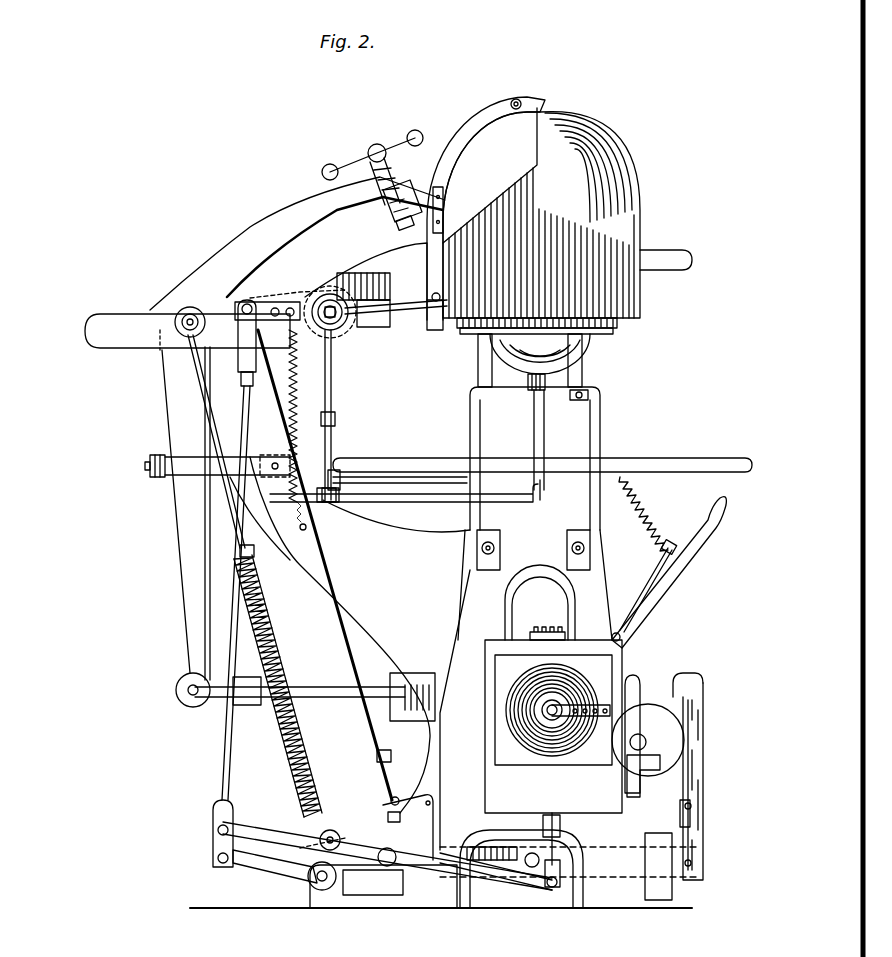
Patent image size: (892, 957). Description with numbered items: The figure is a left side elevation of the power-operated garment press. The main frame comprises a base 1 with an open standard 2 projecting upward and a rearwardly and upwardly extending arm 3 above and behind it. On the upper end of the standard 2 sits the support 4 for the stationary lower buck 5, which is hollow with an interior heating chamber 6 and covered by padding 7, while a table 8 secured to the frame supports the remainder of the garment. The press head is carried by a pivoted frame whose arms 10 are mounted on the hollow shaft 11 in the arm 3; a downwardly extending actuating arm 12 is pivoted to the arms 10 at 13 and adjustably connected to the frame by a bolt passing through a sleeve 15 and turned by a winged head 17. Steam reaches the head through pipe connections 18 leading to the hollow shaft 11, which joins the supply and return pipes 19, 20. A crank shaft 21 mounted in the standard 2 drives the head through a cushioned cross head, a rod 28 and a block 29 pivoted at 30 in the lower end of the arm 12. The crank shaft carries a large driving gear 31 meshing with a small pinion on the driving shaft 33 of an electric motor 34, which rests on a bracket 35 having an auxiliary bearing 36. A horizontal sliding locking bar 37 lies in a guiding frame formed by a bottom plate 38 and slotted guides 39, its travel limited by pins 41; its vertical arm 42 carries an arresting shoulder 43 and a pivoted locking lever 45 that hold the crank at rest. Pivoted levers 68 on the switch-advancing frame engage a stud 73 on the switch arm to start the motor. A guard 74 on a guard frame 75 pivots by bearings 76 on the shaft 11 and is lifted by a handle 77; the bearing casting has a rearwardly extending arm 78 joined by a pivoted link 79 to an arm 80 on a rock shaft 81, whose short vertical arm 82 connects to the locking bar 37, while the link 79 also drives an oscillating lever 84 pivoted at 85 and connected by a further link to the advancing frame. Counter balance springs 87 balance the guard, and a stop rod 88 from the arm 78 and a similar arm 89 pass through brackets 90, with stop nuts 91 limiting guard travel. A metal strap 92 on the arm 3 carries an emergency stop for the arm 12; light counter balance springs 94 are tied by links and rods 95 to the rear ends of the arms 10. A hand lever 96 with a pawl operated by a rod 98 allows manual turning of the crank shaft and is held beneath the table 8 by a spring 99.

The base 1 is at (440, 908).
The standard 2 is at (595, 598).
The rearwardly and upwardly extending arm 3 is at (375, 545).
The support 4 is at (573, 443).
The lower buck 5 is at (600, 330).
The heating chamber 6 is at (582, 356).
The padding 7 is at (457, 326).
The table 8 is at (684, 460).
The arms 10 is at (368, 258).
The hollow shaft 11 is at (322, 336).
The actuating arm 12 is at (186, 578).
The pivot 13 is at (182, 318).
The sleeve 15 is at (410, 196).
The winged head 17 is at (376, 146).
The pipe connections 18 is at (412, 320).
The supply pipe 19 is at (425, 500).
The return pipe 20 is at (402, 478).
The crank shaft 21 is at (590, 697).
The rod 28 is at (330, 700).
The block 29 is at (246, 706).
The pivotal connection 30 is at (188, 690).
The driving gear 31 is at (540, 630).
The driving shaft 33 is at (650, 735).
The electric motor 34 is at (638, 708).
The bracket 35 is at (650, 772).
The auxiliary bearing 36 is at (562, 838).
The locking bar 37 is at (578, 870).
The bottom plate 38 is at (515, 888).
The guides 39 is at (665, 838).
The pins 41 is at (692, 863).
The vertical arm 42 is at (693, 740).
The arresting shoulder 43 is at (690, 680).
The locking lever 45 is at (690, 778).
The pivoted levers 68 is at (576, 737).
The stud 73 is at (612, 715).
The guard 74 is at (541, 213).
The guard frame 75 is at (492, 135).
The bearings 76 is at (348, 326).
The handle 77 is at (684, 262).
The rearwardly extending arm 78 is at (238, 308).
The pivoted link 79 is at (224, 742).
The arm 80 is at (260, 870).
The rock shaft 81 is at (326, 884).
The short vertical arm 82 is at (333, 838).
The oscillating lever 84 is at (252, 830).
The pivot 85 is at (392, 864).
The counter balance springs 87 is at (300, 508).
The stop rod 88 is at (350, 636).
The arm 89 is at (264, 300).
The brackets 90 is at (388, 806).
The stop nuts 91 is at (380, 757).
The metal strap 92 is at (222, 470).
The counter balance springs 94 is at (280, 636).
The links and rods 95 is at (232, 418).
The hand lever 96 is at (660, 590).
The rod 98 is at (628, 615).
The spring 99 is at (642, 522).